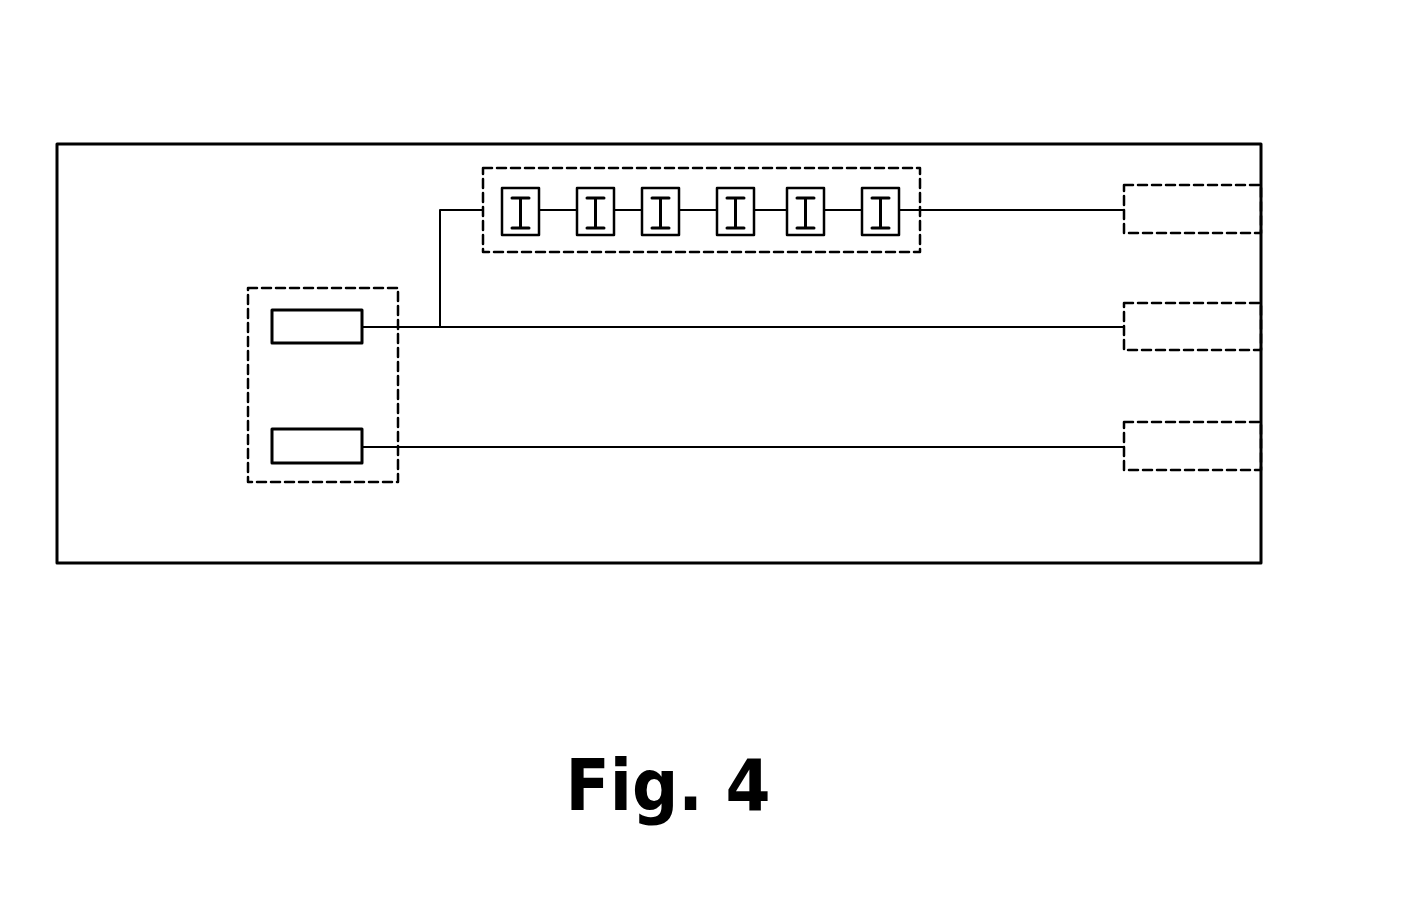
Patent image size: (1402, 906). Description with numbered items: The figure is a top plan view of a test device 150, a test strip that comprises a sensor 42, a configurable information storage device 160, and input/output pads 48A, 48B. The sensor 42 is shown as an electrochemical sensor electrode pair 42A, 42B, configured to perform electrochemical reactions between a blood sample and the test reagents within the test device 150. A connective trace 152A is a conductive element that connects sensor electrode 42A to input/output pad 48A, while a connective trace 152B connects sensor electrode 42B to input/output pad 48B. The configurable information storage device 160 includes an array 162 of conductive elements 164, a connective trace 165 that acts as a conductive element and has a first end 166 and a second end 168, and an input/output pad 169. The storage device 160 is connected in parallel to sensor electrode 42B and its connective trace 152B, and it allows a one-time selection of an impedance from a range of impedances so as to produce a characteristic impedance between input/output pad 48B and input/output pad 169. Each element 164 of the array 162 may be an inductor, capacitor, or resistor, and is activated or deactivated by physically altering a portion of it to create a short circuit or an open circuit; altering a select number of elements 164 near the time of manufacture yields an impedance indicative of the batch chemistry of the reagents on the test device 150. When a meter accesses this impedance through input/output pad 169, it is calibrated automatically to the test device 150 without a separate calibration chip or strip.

The test device 150 is at (212, 124).
The configurable information storage device 160 is at (557, 143).
The array 162 is at (724, 165).
The conductive element 164 is at (592, 236).
The connective trace 165 is at (958, 210).
The first end 166 is at (437, 263).
The second end 168 is at (1097, 210).
The input/output pad 169 is at (1222, 184).
The input/output pad 48A is at (1222, 421).
The input/output pad 48B is at (1222, 302).
The sensor 42 is at (222, 360).
The sensor electrode 42A is at (312, 463).
The sensor electrode 42B is at (323, 343).
The connective trace 152A is at (773, 447).
The connective trace 152B is at (585, 327).